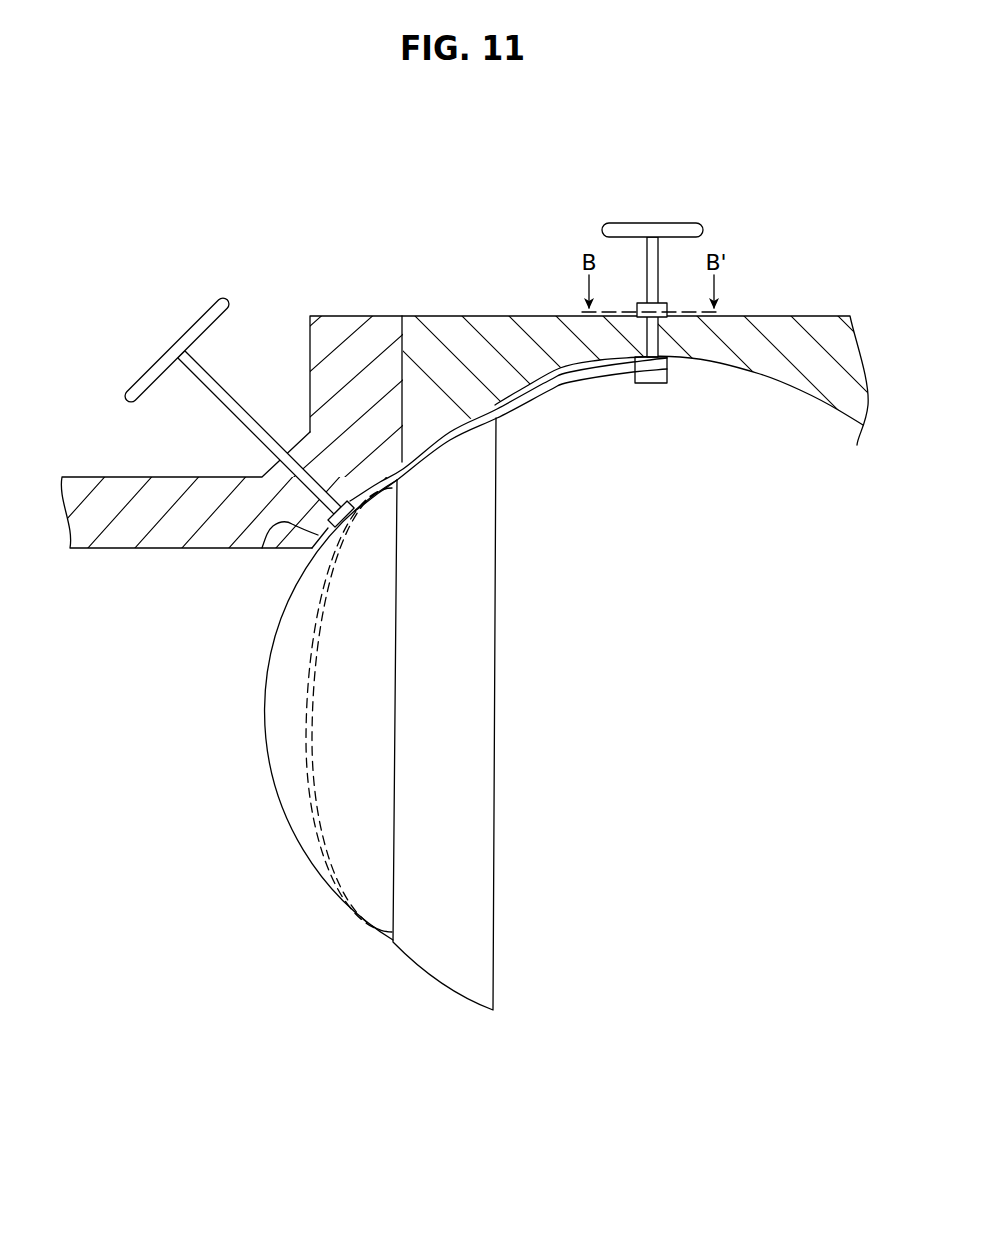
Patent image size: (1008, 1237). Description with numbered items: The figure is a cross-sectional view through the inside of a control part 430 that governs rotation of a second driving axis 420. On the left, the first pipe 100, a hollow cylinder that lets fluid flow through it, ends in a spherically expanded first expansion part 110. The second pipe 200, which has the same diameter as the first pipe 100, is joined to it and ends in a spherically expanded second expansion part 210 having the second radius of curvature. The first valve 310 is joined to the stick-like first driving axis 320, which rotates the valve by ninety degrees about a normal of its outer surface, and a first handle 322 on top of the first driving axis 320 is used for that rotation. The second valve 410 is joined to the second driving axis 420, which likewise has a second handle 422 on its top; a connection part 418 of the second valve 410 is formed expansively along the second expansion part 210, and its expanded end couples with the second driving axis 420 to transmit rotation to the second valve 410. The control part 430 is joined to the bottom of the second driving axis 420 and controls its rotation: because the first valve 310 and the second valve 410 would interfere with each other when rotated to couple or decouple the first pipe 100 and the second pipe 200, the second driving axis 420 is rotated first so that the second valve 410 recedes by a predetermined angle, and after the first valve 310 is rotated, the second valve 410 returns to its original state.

The first pipe 100 is at (112, 470).
The first expansion part 110 is at (262, 548).
The second pipe 200 is at (452, 292).
The second expansion part 210 is at (545, 373).
The first valve 310 is at (295, 843).
The first driving axis 320 is at (219, 359).
The first handle 322 is at (178, 352).
The second valve 410 is at (493, 803).
The connection part 418 is at (567, 391).
The second driving axis 420 is at (696, 263).
The second handle 422 is at (633, 229).
The control part 430 is at (626, 292).